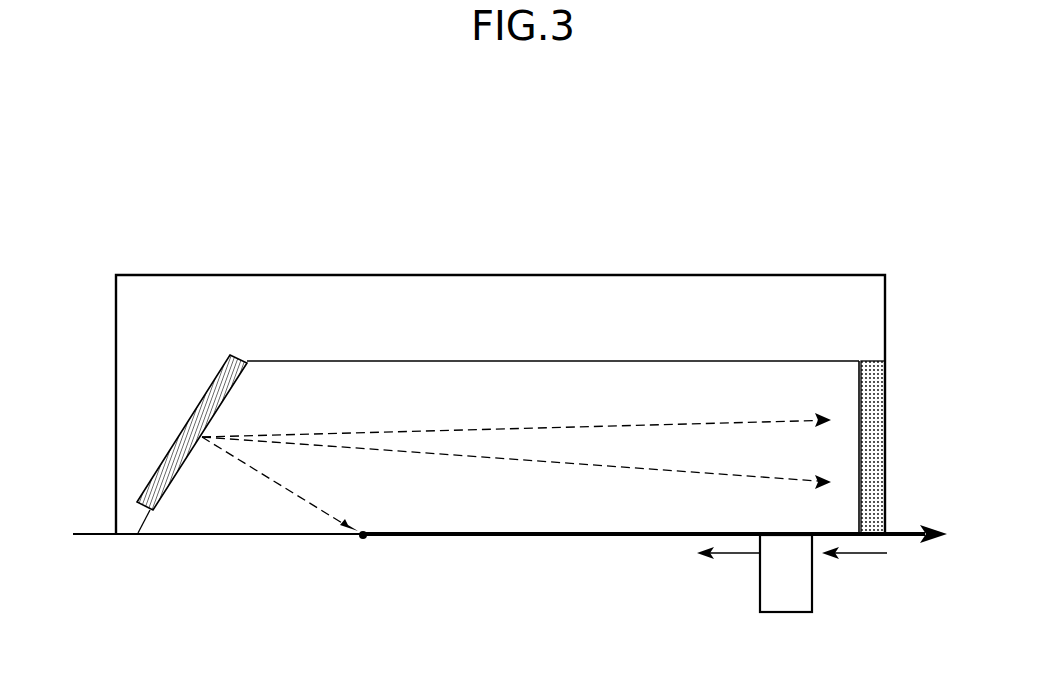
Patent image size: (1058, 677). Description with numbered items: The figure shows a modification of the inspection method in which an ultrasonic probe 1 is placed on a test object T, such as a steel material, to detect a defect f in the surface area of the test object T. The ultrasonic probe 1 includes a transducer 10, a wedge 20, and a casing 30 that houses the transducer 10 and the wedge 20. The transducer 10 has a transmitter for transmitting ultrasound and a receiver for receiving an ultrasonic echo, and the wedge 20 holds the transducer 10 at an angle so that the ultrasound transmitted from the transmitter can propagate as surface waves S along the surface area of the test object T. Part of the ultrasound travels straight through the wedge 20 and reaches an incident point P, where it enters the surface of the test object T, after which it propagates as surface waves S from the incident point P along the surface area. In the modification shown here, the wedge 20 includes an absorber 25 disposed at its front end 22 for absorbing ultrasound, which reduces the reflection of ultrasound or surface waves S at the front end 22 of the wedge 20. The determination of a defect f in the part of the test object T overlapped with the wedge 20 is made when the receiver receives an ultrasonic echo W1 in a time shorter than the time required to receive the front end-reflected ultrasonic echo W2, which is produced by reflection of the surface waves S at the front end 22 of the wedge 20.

The ultrasonic probe 1 is at (224, 215).
The transducer 10 is at (207, 388).
The wedge 20 is at (327, 361).
The front end of the wedge 22 is at (851, 400).
The absorber 25 is at (887, 420).
The casing 30 is at (512, 275).
The test object T is at (92, 524).
The incident point P is at (365, 530).
The surface waves S is at (898, 540).
The defect f is at (760, 598).
The ultrasonic echo W1 is at (728, 566).
The front end-reflected ultrasonic echo W2 is at (854, 566).